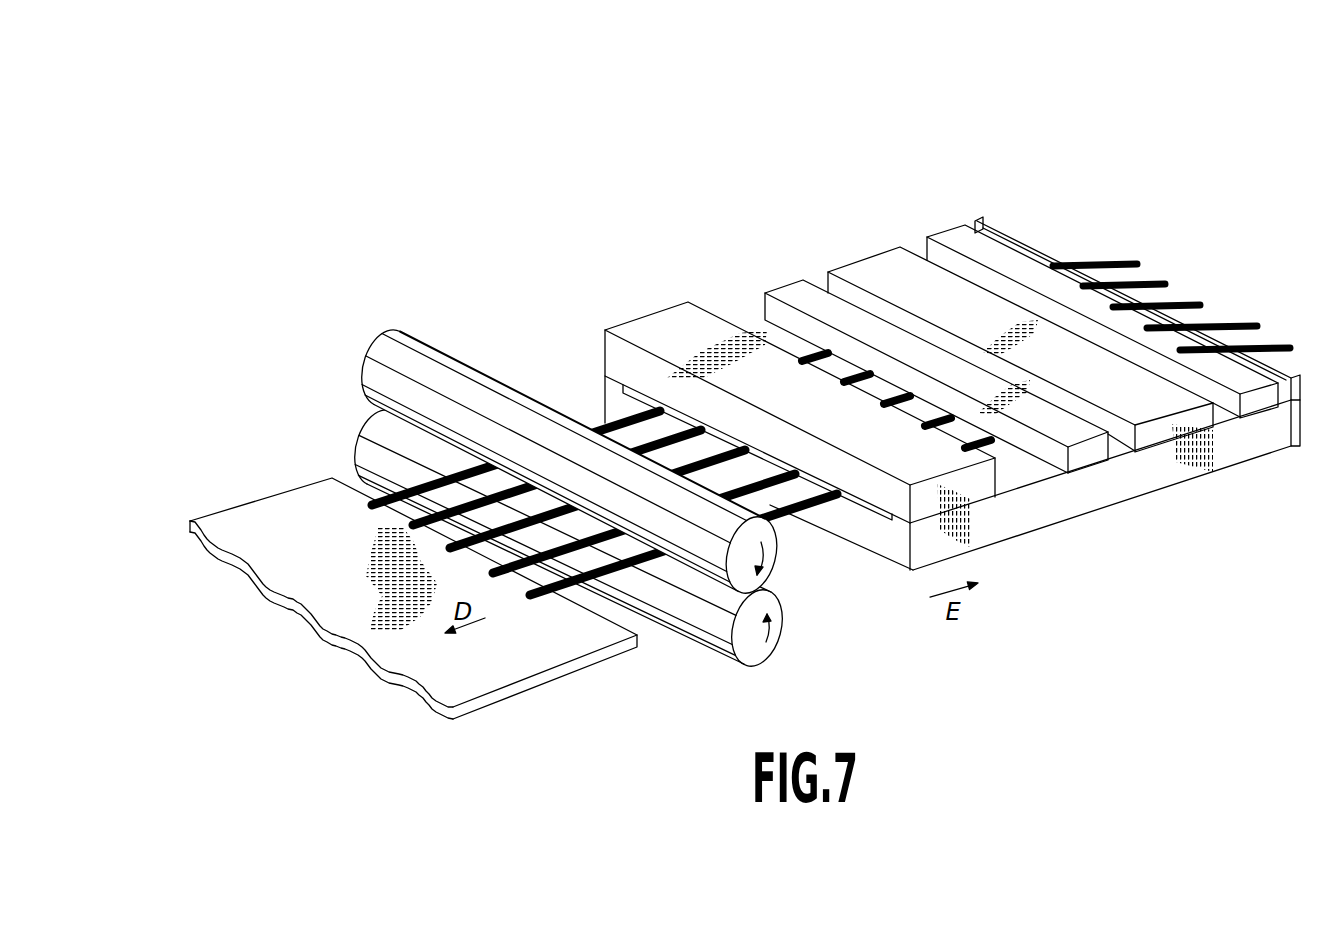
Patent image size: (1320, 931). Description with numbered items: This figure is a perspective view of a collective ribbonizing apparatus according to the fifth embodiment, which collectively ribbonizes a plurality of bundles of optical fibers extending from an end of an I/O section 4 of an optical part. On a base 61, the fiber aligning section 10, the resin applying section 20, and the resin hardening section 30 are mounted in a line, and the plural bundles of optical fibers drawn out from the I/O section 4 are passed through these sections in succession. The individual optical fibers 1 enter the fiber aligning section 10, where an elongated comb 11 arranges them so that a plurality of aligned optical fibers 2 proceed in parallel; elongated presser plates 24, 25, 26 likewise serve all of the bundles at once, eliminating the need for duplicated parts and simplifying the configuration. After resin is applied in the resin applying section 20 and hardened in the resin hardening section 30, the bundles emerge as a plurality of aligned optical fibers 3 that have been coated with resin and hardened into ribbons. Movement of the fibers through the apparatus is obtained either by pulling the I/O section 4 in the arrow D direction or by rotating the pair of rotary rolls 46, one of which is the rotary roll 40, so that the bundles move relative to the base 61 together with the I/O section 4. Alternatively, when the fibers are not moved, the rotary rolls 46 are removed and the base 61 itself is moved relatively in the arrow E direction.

The optical fiber 1 is at (1171, 256).
The aligned optical fibers 2 is at (805, 342).
The resin-coated hardened optical fibers 3 is at (600, 428).
The I/O section 4 is at (522, 668).
The fiber aligning section 10 is at (1137, 216).
The comb 11 is at (1033, 250).
The resin applying section 20 is at (1032, 364).
The presser plate 24 is at (1267, 400).
The presser plate 25 is at (1088, 457).
The presser plate 26 is at (1173, 423).
The resin hardening section 30 is at (624, 308).
The rotary roll 40 is at (446, 326).
The pair of rotary rolls 46 is at (780, 558).
The base 61 is at (1013, 530).